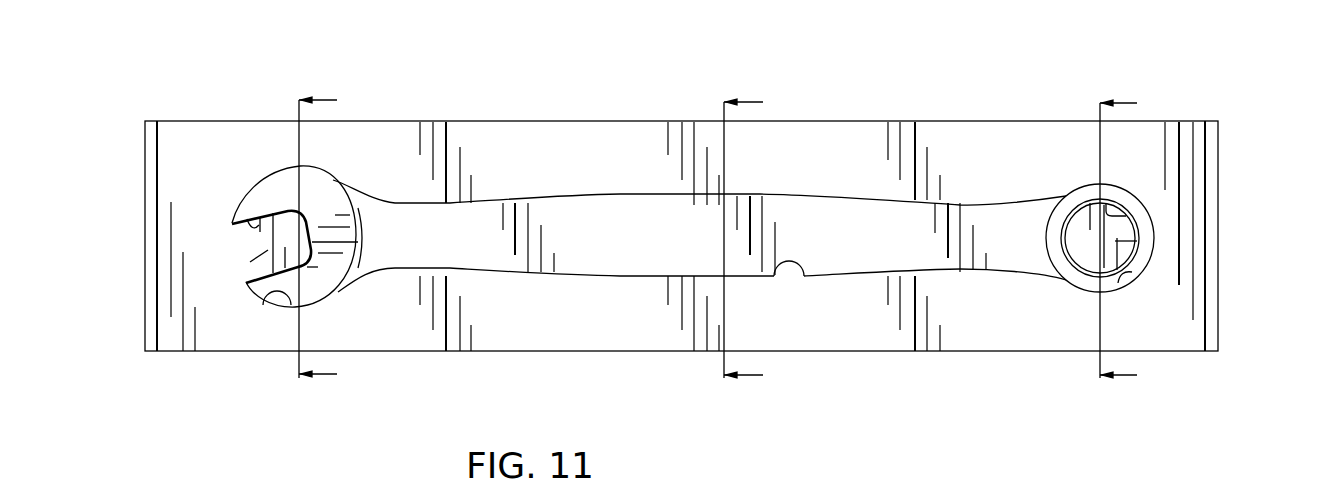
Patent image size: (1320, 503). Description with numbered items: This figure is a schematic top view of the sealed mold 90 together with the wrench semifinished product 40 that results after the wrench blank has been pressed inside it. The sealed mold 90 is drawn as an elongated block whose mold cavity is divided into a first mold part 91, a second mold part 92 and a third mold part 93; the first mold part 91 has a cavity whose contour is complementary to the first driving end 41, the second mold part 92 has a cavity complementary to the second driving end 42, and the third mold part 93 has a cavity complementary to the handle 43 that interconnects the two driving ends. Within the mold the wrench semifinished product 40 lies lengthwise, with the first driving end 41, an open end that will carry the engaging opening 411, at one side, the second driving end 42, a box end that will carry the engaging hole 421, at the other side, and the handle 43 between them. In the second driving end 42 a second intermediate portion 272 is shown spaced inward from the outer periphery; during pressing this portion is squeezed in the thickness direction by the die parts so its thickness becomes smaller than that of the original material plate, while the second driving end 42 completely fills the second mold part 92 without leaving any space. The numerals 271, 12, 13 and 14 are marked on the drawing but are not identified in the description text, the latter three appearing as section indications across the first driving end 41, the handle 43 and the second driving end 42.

The wrench semifinished product 40 is at (720, 244).
The first driving end 41 is at (265, 204).
The engaging opening 411 is at (231, 222).
The second driving end 42 is at (1080, 192).
The engaging hole 421 is at (1132, 210).
The handle 43 is at (604, 226).
The sealed mold 90 is at (1205, 175).
The first mold part 91 is at (262, 303).
The second mold part 92 is at (1133, 278).
The third mold part 93 is at (788, 262).
The jaw inner surface 271 is at (250, 262).
The second intermediate portion 272 is at (1118, 241).
The section line 12 is at (321, 243).
The section line 13 is at (1123, 243).
The section line 14 is at (744, 242).